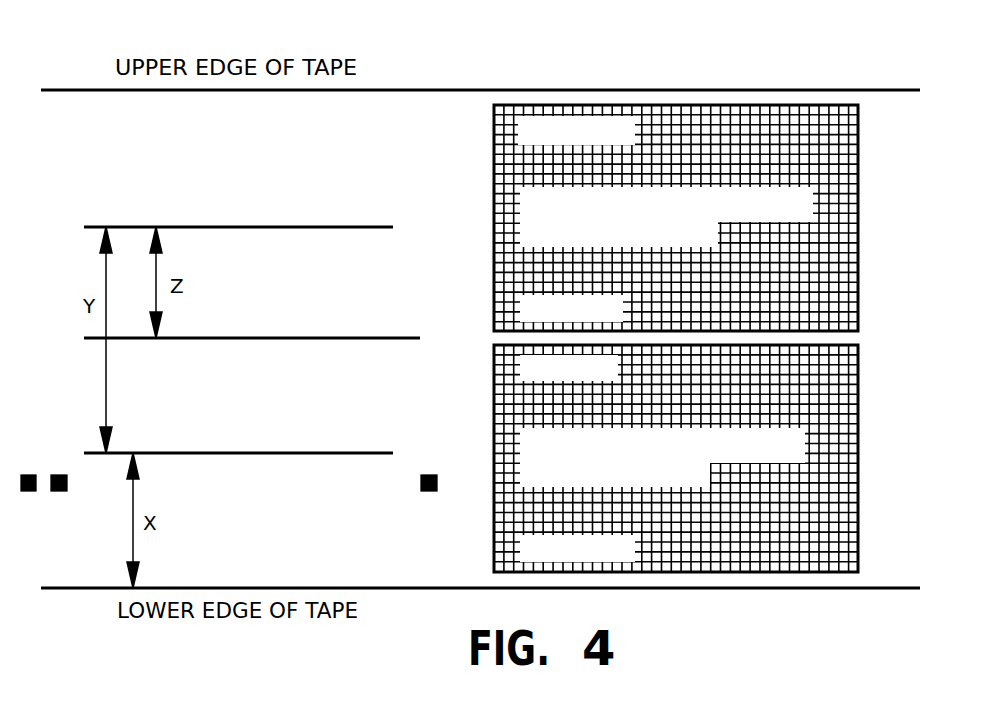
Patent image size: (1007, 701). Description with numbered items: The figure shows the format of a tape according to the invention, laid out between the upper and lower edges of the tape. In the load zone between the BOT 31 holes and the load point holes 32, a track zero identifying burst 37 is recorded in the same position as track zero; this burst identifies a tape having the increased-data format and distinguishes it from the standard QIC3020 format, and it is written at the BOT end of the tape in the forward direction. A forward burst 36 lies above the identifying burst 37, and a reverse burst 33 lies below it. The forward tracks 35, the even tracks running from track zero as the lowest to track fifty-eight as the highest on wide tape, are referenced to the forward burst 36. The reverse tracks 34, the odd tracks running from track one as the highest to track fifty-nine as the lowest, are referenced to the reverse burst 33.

The BOT 31 is at (32, 473).
The load point holes 32 is at (437, 477).
The reverse burst 33 is at (250, 454).
The reverse tracks 34 is at (859, 440).
The forward tracks 35 is at (858, 207).
The forward burst 36 is at (122, 227).
The track zero identifying burst 37 is at (262, 339).